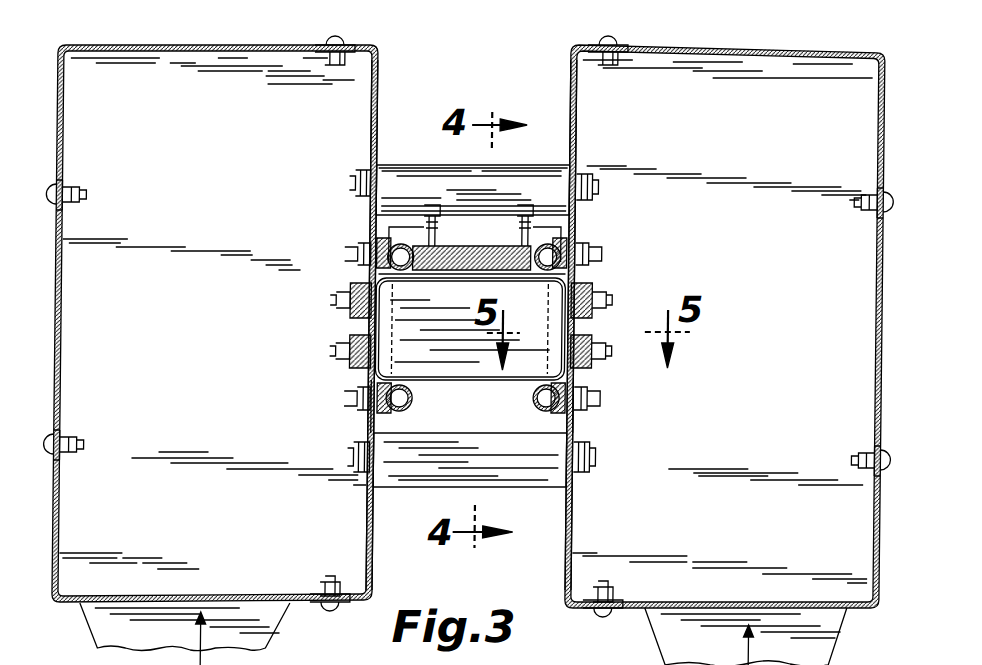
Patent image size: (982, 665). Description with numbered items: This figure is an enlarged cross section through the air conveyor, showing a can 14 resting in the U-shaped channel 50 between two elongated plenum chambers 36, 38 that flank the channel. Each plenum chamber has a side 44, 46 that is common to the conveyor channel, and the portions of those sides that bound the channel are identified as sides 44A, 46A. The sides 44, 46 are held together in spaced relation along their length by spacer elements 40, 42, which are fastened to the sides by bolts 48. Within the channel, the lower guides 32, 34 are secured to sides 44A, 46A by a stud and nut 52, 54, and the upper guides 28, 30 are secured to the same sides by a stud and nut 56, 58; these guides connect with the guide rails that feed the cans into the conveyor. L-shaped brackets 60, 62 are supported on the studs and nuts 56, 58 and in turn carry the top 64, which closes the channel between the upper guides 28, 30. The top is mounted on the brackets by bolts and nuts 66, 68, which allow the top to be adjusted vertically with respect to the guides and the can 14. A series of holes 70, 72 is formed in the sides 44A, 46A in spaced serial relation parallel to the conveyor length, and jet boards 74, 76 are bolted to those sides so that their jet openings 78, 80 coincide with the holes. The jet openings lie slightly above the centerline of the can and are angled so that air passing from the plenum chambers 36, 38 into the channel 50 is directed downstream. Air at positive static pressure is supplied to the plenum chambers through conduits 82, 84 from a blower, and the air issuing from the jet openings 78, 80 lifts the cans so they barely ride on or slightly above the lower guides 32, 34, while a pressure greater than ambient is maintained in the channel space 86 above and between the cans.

The can 14 is at (452, 355).
The upper guide 28 is at (388, 243).
The upper guide 30 is at (562, 245).
The lower guide 32 is at (413, 402).
The lower guide 34 is at (545, 402).
The plenum chamber 36 is at (212, 292).
The plenum chamber 38 is at (780, 292).
The spacer element 40 is at (397, 172).
The spacer element 42 is at (493, 470).
The side of plenum chamber 44 is at (369, 118).
The side of plenum chamber 46 is at (574, 105).
The side of U-shaped channel 44A is at (372, 392).
The side of U-shaped channel 46A is at (582, 382).
The bolt 48 is at (357, 180).
The U-shaped channel 50 is at (527, 413).
The stud and nut 52 is at (350, 402).
The stud and nut 54 is at (596, 405).
The stud and nut 56 is at (347, 254).
The stud and nut 58 is at (600, 256).
The L-shaped bracket 60 is at (388, 228).
The L-shaped bracket 62 is at (575, 225).
The top of the channel 64 is at (495, 255).
The bolt and nut 66 is at (431, 205).
The bolt and nut 68 is at (524, 205).
The hole 70 is at (379, 318).
The hole 72 is at (565, 322).
The jet board 74 is at (350, 348).
The jet board 76 is at (592, 286).
The jet opening 78 is at (352, 320).
The jet opening 80 is at (592, 322).
The conduit 82 is at (111, 626).
The conduit 84 is at (823, 638).
The channel space 86 is at (375, 275).